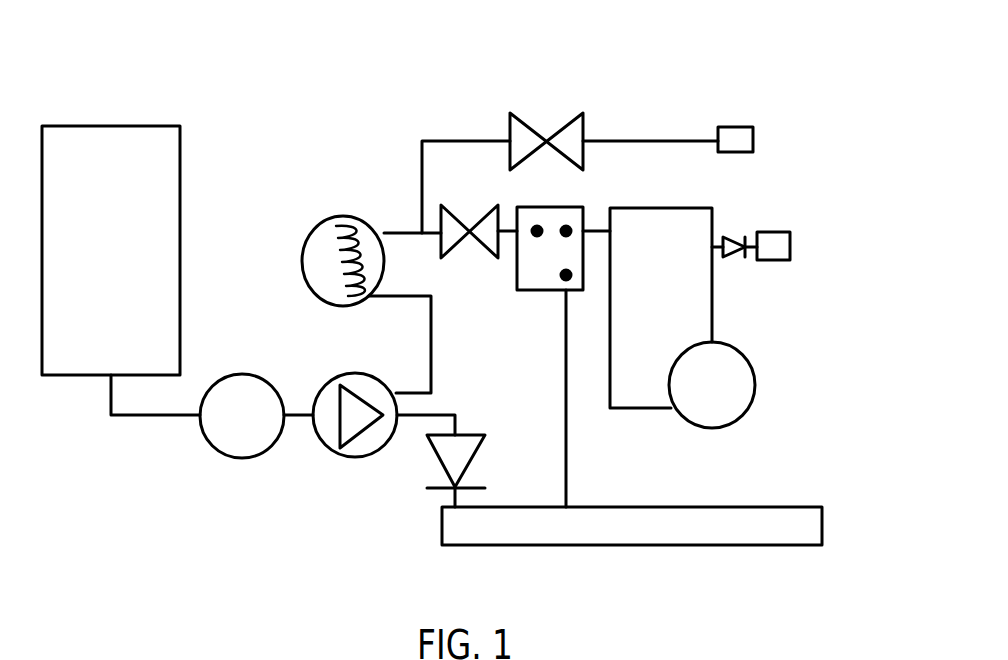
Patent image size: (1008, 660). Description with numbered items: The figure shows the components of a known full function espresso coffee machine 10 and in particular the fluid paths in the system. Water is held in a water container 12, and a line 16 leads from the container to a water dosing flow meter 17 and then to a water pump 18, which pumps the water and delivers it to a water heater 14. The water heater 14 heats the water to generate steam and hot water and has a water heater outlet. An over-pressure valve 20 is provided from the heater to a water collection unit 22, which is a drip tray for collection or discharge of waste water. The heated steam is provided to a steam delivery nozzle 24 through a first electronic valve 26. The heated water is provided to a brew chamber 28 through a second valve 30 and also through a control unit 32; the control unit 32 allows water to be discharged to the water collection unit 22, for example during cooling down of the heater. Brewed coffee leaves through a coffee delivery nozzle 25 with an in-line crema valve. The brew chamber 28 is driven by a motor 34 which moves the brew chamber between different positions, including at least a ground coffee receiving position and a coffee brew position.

The coffee machine 10 is at (277, 73).
The water container 12 is at (180, 205).
The water heater 14 is at (343, 216).
The supply conduit 16 is at (128, 417).
The water dosing flow meter 17 is at (263, 458).
The water pump 18 is at (368, 458).
The over-pressure valve 20 is at (480, 448).
The water collection unit 22 is at (793, 507).
The steam delivery nozzle 24 is at (743, 127).
The coffee delivery nozzle 25 is at (780, 232).
The first electronic valve 26 is at (583, 113).
The brew chamber 28 is at (712, 300).
The second valve 30 is at (468, 240).
The control unit 32 is at (538, 290).
The motor 34 is at (740, 420).